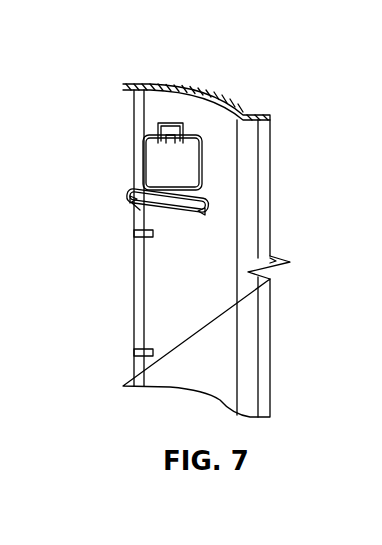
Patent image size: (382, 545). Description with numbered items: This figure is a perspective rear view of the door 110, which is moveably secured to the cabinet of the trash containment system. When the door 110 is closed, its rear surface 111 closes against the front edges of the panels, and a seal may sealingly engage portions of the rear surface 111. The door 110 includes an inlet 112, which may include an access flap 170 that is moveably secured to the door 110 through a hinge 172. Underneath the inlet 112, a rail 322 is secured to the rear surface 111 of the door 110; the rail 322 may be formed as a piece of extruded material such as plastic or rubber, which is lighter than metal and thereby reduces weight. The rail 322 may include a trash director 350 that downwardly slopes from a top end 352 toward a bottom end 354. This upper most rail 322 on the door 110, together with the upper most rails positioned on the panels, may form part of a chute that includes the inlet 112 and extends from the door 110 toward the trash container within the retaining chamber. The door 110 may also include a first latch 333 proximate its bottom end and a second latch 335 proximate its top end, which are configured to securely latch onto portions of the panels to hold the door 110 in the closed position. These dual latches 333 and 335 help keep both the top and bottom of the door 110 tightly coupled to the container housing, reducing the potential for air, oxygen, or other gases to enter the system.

The door 110 is at (217, 310).
The rear surface 111 is at (163, 306).
The inlet 112 is at (203, 167).
The access flap 170 is at (153, 152).
The hinge 172 is at (158, 125).
The trash director 350 is at (210, 207).
The top end 352 is at (130, 200).
The bottom end 354 is at (207, 217).
The rail 322 is at (140, 208).
The second latch 335 is at (138, 240).
The first latch 333 is at (142, 358).